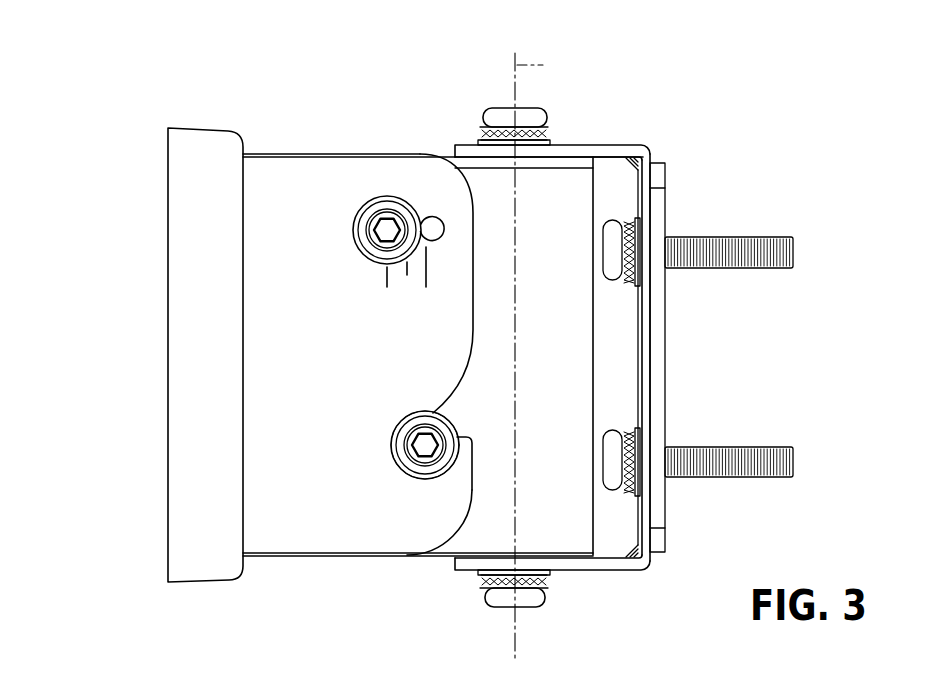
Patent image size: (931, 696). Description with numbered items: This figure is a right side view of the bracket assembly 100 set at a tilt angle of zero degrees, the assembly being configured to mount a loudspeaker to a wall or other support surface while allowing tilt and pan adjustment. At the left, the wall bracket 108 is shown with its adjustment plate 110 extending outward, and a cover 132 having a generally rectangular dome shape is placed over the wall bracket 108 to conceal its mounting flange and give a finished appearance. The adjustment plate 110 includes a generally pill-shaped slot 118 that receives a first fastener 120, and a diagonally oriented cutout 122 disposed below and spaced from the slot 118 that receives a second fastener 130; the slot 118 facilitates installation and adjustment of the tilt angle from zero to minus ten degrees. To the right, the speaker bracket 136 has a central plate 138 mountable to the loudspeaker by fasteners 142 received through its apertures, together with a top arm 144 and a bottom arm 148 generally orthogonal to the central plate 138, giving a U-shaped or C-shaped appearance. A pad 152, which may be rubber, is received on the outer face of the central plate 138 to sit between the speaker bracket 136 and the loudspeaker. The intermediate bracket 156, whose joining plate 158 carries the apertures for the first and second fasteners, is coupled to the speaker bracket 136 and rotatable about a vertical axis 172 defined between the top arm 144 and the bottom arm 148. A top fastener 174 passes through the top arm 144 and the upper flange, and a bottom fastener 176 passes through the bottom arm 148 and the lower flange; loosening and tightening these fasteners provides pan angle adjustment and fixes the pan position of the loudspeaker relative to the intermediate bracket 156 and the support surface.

The bracket assembly 100 is at (190, 90).
The wall bracket 108 is at (363, 557).
The adjustment plate 110 is at (330, 168).
The slot 118 is at (421, 215).
The first fastener 120 is at (354, 229).
The cutout 122 is at (455, 413).
The second fastener 130 is at (392, 444).
The cover 132 is at (168, 518).
The speaker bracket 136 is at (605, 145).
The central plate 138 is at (640, 360).
The fastener 142 is at (745, 237).
The top arm 144 is at (568, 143).
The bottom arm 148 is at (603, 570).
The pad 152 is at (663, 207).
The intermediate bracket 156 is at (553, 198).
The joining plate 158 is at (498, 510).
The vertical axis 172 is at (543, 65).
The top fastener 174 is at (502, 108).
The bottom fastener 176 is at (535, 607).